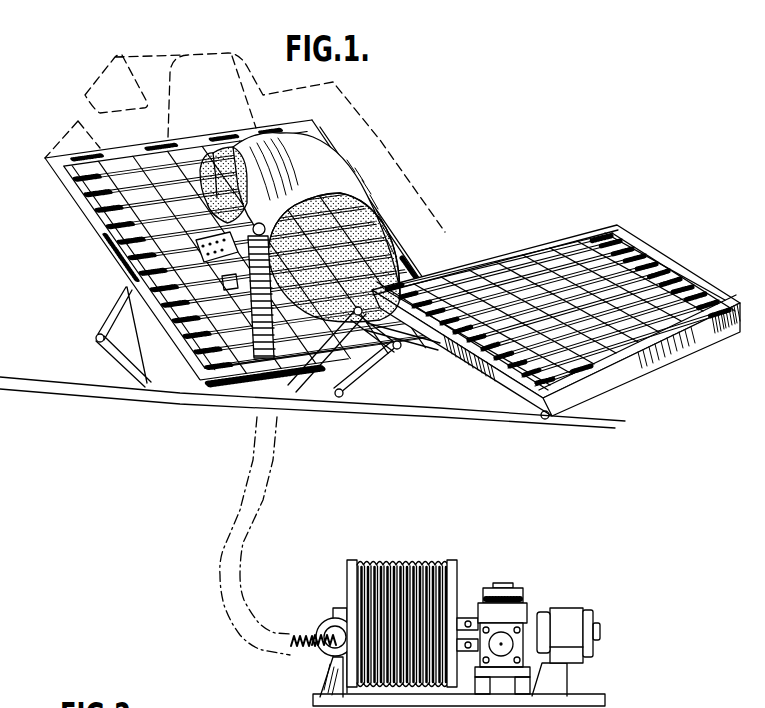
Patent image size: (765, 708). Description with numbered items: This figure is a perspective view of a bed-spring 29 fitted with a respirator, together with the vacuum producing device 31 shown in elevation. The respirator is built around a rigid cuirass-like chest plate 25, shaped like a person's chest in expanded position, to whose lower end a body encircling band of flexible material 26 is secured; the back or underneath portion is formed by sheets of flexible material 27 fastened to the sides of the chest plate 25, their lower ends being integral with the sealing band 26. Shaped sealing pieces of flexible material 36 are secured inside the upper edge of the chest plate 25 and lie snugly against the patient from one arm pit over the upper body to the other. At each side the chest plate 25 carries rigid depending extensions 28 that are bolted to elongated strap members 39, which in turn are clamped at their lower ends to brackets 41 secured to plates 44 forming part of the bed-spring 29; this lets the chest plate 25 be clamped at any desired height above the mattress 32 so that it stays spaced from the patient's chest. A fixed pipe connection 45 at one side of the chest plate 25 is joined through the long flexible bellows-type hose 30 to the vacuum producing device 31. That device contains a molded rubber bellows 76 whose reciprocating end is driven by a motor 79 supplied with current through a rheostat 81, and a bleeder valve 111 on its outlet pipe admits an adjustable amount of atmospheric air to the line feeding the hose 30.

The chest plate 25 is at (343, 170).
The body encircling band 26 is at (412, 250).
The back members 27 is at (418, 272).
The rigid extensions 28 is at (228, 257).
The bed-spring 29 is at (118, 262).
The flexible hose 30 is at (197, 373).
The vacuum producing device 31 is at (462, 578).
The mattress 32 is at (69, 130).
The sealing pieces 36 is at (192, 162).
The strap members 39 is at (180, 263).
The brackets 41 is at (175, 312).
The plates 44 is at (117, 237).
The pipe connection 45 is at (261, 221).
The rubber bellows 76 is at (388, 561).
The motor 79 is at (563, 611).
The rheostat 81 is at (523, 598).
The bleeder valve 111 is at (323, 617).